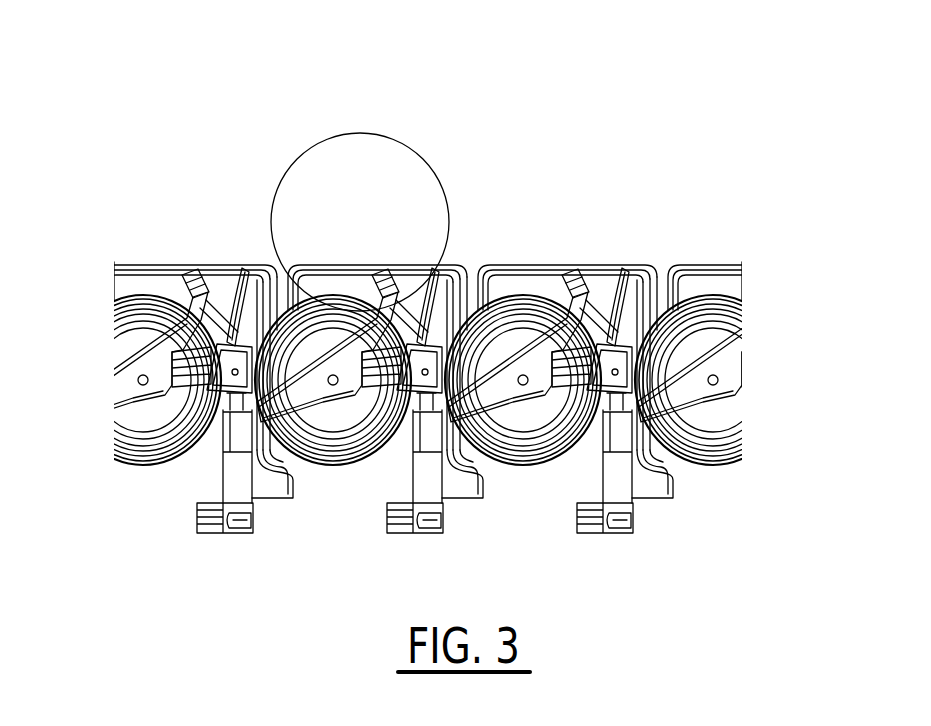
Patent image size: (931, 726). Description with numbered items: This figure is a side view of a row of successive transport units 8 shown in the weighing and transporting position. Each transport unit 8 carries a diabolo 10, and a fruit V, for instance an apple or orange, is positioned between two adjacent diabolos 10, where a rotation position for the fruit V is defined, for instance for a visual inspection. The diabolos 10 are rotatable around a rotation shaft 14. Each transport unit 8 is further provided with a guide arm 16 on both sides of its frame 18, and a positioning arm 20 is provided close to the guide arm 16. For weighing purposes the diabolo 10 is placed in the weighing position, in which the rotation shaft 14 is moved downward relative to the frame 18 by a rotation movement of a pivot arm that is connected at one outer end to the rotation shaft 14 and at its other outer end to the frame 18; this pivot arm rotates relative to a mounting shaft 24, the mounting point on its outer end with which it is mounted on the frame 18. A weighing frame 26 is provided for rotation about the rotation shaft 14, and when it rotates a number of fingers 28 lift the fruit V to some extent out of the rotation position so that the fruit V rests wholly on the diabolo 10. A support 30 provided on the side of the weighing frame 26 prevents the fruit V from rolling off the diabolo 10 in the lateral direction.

The transport unit 8 is at (657, 172).
The diabolo 10 is at (327, 453).
The rotation shaft 14 is at (526, 384).
The guide arm 16 is at (627, 522).
The frame 18 is at (518, 272).
The positioning arm 20 is at (670, 472).
The mounting shaft 24 is at (652, 302).
The weighing frame 26 is at (485, 392).
The finger 28 is at (623, 272).
The support 30 is at (570, 272).
The fruit V is at (410, 180).